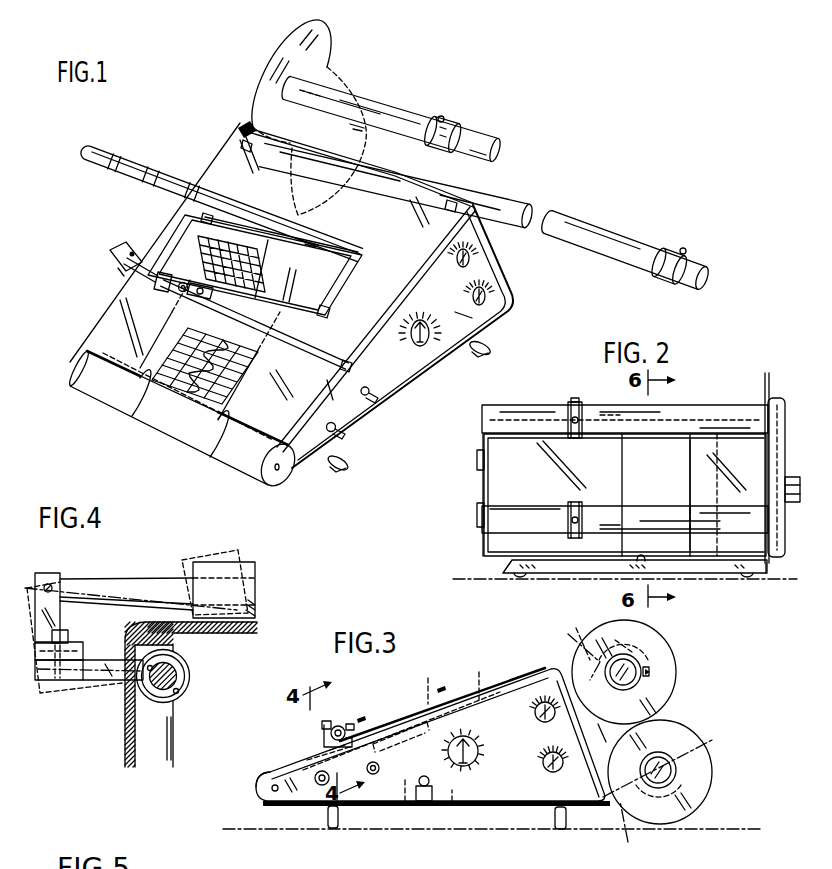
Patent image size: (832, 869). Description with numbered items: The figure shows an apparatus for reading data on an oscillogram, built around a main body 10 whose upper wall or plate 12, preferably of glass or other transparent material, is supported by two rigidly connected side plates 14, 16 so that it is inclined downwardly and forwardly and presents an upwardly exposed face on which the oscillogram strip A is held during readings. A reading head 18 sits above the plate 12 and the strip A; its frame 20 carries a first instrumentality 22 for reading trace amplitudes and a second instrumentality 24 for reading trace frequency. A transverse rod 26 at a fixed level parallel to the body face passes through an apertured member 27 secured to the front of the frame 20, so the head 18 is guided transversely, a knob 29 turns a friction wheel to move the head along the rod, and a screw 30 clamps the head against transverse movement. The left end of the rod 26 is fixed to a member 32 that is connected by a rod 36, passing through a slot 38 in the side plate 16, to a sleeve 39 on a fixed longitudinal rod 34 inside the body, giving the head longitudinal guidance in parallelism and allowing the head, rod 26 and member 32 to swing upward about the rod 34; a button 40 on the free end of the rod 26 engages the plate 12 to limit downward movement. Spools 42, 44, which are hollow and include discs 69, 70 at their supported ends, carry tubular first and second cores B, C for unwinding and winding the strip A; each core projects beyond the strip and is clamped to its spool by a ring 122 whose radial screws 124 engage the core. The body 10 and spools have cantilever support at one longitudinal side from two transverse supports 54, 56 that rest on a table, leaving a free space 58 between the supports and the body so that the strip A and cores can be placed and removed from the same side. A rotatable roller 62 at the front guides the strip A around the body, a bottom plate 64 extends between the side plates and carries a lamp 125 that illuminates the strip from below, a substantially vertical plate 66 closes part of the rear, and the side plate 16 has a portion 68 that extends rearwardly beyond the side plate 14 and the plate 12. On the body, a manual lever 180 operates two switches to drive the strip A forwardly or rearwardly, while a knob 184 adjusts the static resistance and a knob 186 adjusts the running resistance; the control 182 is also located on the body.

In FIG. 1, the main body 10 is at (198, 170).
In FIG. 2, the main body 10 is at (476, 450).
In FIG. 3, the main body 10 is at (508, 668).
In FIG. 1, the upper wall or plate 12 is at (113, 320).
In FIG. 3, the upper wall or plate 12 is at (290, 765).
In FIG. 4, the upper wall or plate 12 is at (245, 637).
In FIG. 1, the side plate 14 is at (405, 386).
In FIG. 2, the side plate 14 is at (490, 488).
In FIG. 3, the side plate 14 is at (483, 801).
In FIG. 1, the side plate 16 is at (72, 370).
In FIG. 4, the side plate 16 is at (125, 742).
In FIG. 1, the reading head 18 is at (354, 247).
In FIG. 1, the frame 20 is at (343, 299).
In FIG. 1, the first instrumentality 22 is at (240, 221).
In FIG. 1, the second instrumentality 24 is at (180, 246).
In FIG. 1, the transverse rod 26 is at (290, 340).
In FIG. 3, the transverse rod 26 is at (330, 750).
In FIG. 4, the transverse rod 26 is at (120, 578).
In FIG. 1, the member 27 is at (163, 282).
In FIG. 3, the member 27 is at (325, 740).
In FIG. 4, the member 27 is at (252, 575).
In FIG. 1, the knob 29 is at (182, 294).
In FIG. 3, the knob 29 is at (323, 724).
In FIG. 1, the screw 30 is at (243, 297).
In FIG. 3, the screw 30 is at (338, 725).
In FIG. 1, the member 32 is at (117, 243).
In FIG. 4, the member 32 is at (43, 573).
In FIG. 3, the longitudinal rod 34 is at (468, 682).
In FIG. 4, the longitudinal rod 34 is at (178, 686).
In FIG. 3, the rod 36 is at (416, 787).
In FIG. 4, the rod 36 is at (52, 680).
In FIG. 3, the slot 38 is at (416, 684).
In FIG. 4, the slot 38 is at (125, 685).
In FIG. 3, the sleeve 39 is at (385, 766).
In FIG. 4, the sleeve 39 is at (190, 675).
In FIG. 1, the button 40 is at (333, 366).
In FIG. 3, the button 40 is at (352, 726).
In FIG. 1, the spool 42 is at (505, 152).
In FIG. 2, the spool 42 is at (508, 412).
In FIG. 3, the spool 42 is at (630, 680).
In FIG. 1, the spool 44 is at (522, 212).
In FIG. 2, the spool 44 is at (515, 517).
In FIG. 3, the spool 44 is at (672, 770).
In FIG. 1, the transverse support 54 is at (335, 470).
In FIG. 3, the transverse support 54 is at (333, 828).
In FIG. 1, the transverse support 56 is at (493, 348).
In FIG. 2, the transverse support 56 is at (503, 569).
In FIG. 3, the transverse support 56 is at (560, 830).
In FIG. 2, the free space 58 is at (553, 562).
In FIG. 1, the roller 62 is at (243, 462).
In FIG. 3, the roller 62 is at (257, 789).
In FIG. 2, the bottom plate 64 is at (641, 558).
In FIG. 3, the bottom plate 64 is at (452, 803).
In FIG. 2, the vertical plate 66 is at (690, 468).
In FIG. 1, the rearwardly extending portion 68 is at (250, 120).
In FIG. 2, the rearwardly extending portion 68 is at (775, 400).
In FIG. 3, the rearwardly extending portion 68 is at (670, 707).
In FIG. 1, the disc 69 is at (282, 52).
In FIG. 2, the disc 69 is at (765, 378).
In FIG. 3, the disc 69 is at (610, 625).
In FIG. 1, the disc 70 is at (384, 110).
In FIG. 2, the disc 70 is at (769, 573).
In FIG. 3, the disc 70 is at (710, 790).
In FIG. 1, the ring 122 is at (456, 126).
In FIG. 2, the ring 122 is at (579, 400).
In FIG. 3, the ring 122 is at (650, 668).
In FIG. 1, the screw 124 is at (441, 116).
In FIG. 2, the screw 124 is at (571, 399).
In FIG. 3, the screw 124 is at (652, 672).
In FIG. 3, the lamp 125 is at (410, 801).
In FIG. 1, the manual lever 180 is at (345, 433).
In FIG. 3, the manual lever 180 is at (318, 785).
In FIG. 1, the indicator 182 is at (432, 336).
In FIG. 3, the indicator 182 is at (478, 758).
In FIG. 1, the knob 184 is at (490, 300).
In FIG. 3, the knob 184 is at (553, 773).
In FIG. 1, the knob 186 is at (475, 260).
In FIG. 3, the knob 186 is at (545, 722).
In FIG. 1, the oscillogram strip A is at (185, 425).
In FIG. 3, the oscillogram strip A is at (591, 740).
In FIG. 1, the first core B is at (470, 134).
In FIG. 2, the first core B is at (602, 431).
In FIG. 3, the first core B is at (640, 660).
In FIG. 1, the second core C is at (615, 243).
In FIG. 2, the second core C is at (607, 515).
In FIG. 3, the second core C is at (663, 787).